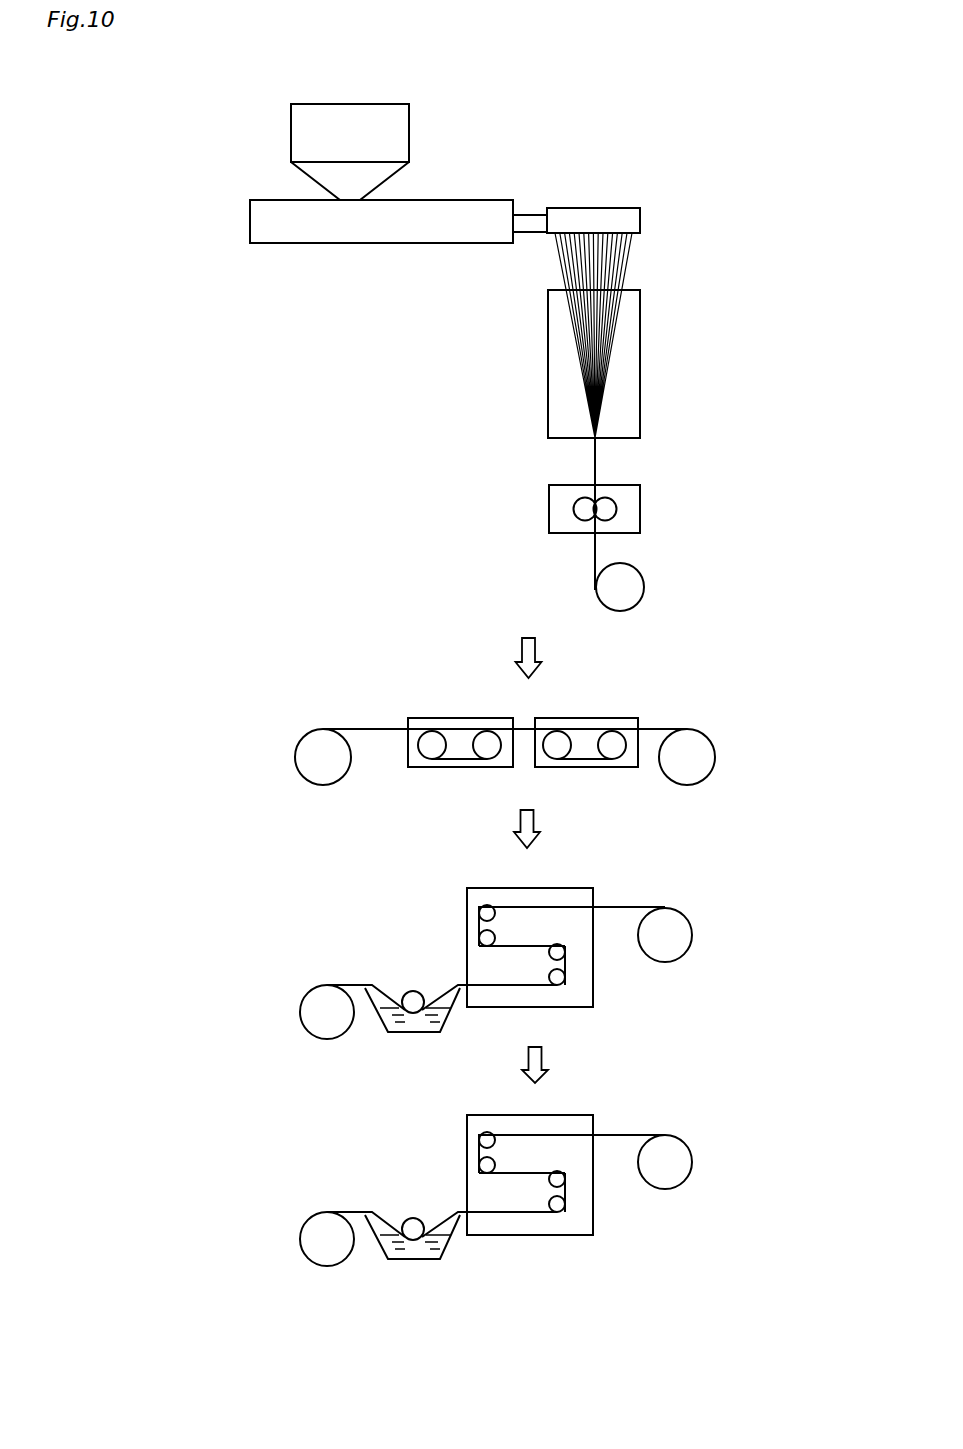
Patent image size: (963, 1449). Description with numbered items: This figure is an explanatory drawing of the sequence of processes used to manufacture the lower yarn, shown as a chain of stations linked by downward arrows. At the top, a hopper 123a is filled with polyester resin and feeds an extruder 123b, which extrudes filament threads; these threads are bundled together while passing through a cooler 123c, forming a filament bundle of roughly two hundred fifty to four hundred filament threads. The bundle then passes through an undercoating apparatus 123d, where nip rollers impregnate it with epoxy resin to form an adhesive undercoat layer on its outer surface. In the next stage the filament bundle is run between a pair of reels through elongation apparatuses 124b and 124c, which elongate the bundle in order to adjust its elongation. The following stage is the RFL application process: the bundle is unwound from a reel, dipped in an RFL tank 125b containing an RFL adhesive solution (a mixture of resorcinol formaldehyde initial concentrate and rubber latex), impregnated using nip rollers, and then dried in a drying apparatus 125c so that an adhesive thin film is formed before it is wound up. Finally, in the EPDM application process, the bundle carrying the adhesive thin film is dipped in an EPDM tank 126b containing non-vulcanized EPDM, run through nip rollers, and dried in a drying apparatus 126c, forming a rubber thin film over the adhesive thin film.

The hopper 123a is at (303, 147).
The extruder 123b is at (338, 234).
The cooler 123c is at (640, 387).
The undercoating apparatus 123d is at (640, 511).
The elongation apparatus 124b is at (463, 718).
The elongation apparatus 124c is at (588, 718).
The RFL tank 125b is at (390, 1024).
The drying apparatus 125c is at (593, 990).
The EPDM tank 126b is at (385, 1252).
The drying apparatus 126c is at (595, 1218).